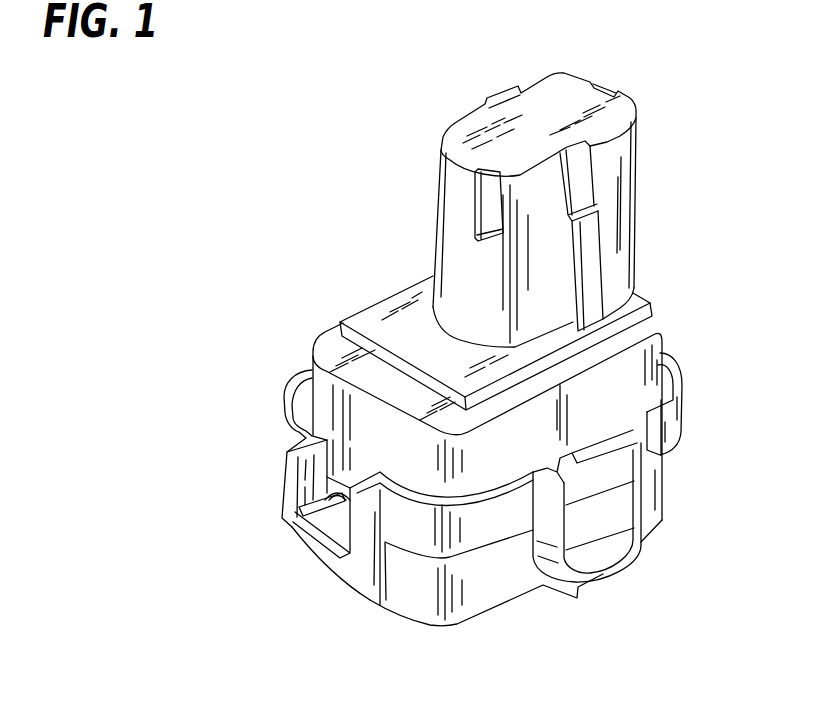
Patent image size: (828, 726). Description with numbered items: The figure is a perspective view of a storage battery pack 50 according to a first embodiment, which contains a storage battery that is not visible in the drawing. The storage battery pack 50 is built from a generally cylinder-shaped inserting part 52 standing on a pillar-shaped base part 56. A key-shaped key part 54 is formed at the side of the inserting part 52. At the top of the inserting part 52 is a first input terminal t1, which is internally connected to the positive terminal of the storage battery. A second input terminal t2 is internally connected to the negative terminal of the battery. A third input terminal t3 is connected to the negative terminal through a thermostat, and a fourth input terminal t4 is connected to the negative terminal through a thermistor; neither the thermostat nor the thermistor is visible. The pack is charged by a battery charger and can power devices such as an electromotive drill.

The storage battery pack 50 is at (363, 111).
The inserting part 52 is at (636, 218).
The key part 54 is at (592, 277).
The base part 56 is at (682, 419).
The first input terminal t1 is at (492, 102).
The second input terminal t2 is at (583, 166).
The third input terminal t3 is at (618, 83).
The fourth input terminal t4 is at (487, 197).